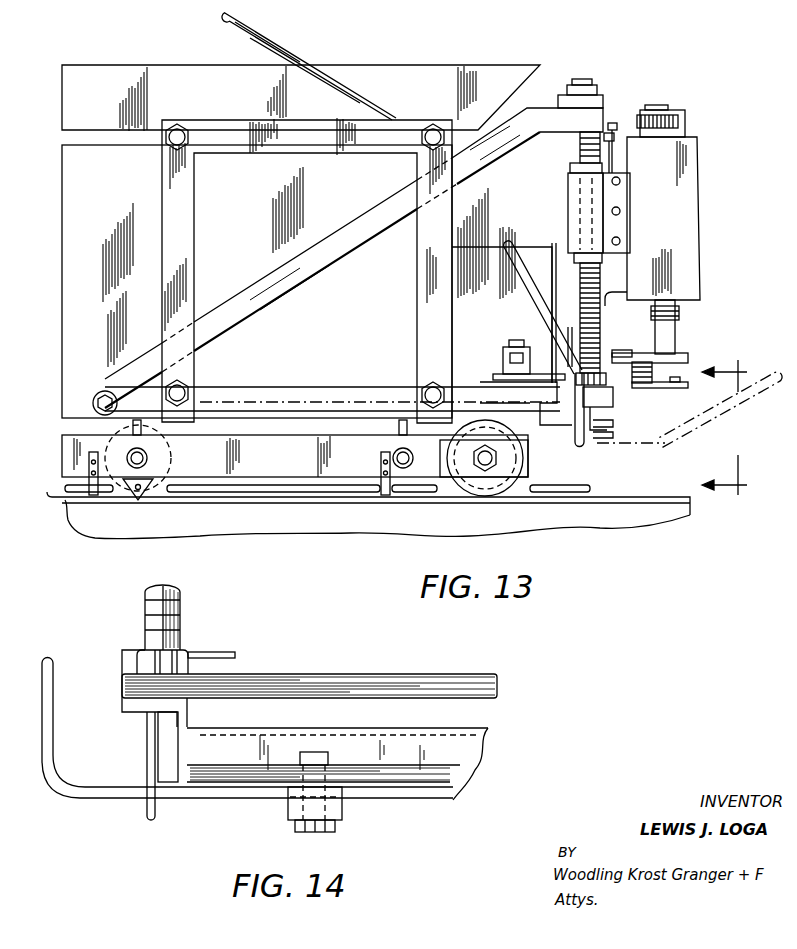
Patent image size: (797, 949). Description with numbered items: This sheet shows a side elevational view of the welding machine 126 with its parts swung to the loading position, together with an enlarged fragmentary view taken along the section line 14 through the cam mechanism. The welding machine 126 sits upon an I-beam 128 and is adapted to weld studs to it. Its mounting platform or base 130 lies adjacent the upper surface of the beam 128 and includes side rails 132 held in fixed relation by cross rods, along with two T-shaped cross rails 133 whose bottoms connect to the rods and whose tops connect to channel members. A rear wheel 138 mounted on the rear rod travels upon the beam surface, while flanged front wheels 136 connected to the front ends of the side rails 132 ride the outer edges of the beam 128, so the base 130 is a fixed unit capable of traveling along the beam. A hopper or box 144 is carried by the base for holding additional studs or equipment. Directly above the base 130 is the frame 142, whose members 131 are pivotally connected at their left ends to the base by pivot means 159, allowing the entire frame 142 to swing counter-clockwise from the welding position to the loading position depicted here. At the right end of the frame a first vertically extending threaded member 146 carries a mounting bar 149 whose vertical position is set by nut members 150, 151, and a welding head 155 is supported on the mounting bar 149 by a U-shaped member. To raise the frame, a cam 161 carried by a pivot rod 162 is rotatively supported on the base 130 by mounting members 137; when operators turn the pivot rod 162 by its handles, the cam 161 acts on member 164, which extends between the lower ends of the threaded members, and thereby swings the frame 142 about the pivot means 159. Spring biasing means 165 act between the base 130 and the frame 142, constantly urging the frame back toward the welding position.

In FIG. 13, the section line 14— 14 is at (723, 429).
In FIG. 13, the welding machine 126 is at (84, 38).
In FIG. 13, the I-beam 128 is at (648, 522).
In FIG. 13, the mounting platform or base 130 is at (257, 463).
In FIG. 13, the frame members 131 is at (227, 320).
In FIG. 13, the side rails 132 is at (312, 468).
In FIG. 13, the T-shaped cross rails 133 is at (145, 425).
In FIG. 13, the flanged front wheels 136 is at (472, 490).
In FIG. 14, the mounting members 137 is at (328, 805).
In FIG. 13, the rear wheel 138 is at (156, 490).
In FIG. 13, the frame 142 is at (340, 245).
In FIG. 13, the hopper or box 144 is at (252, 102).
In FIG. 13, the first vertically extending threaded member 146 is at (601, 318).
In FIG. 14, the first vertically extending threaded member 146 is at (145, 605).
In FIG. 13, the mounting bar 149 is at (630, 198).
In FIG. 13, the nut member 150 is at (570, 168).
In FIG. 13, the nut member 151 is at (572, 257).
In FIG. 13, the welding head 155 is at (700, 220).
In FIG. 13, the pivot means 159 is at (96, 398).
In FIG. 13, the cam 161 is at (600, 424).
In FIG. 14, the cam 161 is at (147, 757).
In FIG. 14, the pivot rod 162 is at (220, 800).
In FIG. 13, the member 164 is at (613, 396).
In FIG. 13, the spring biasing means 165 is at (497, 363).